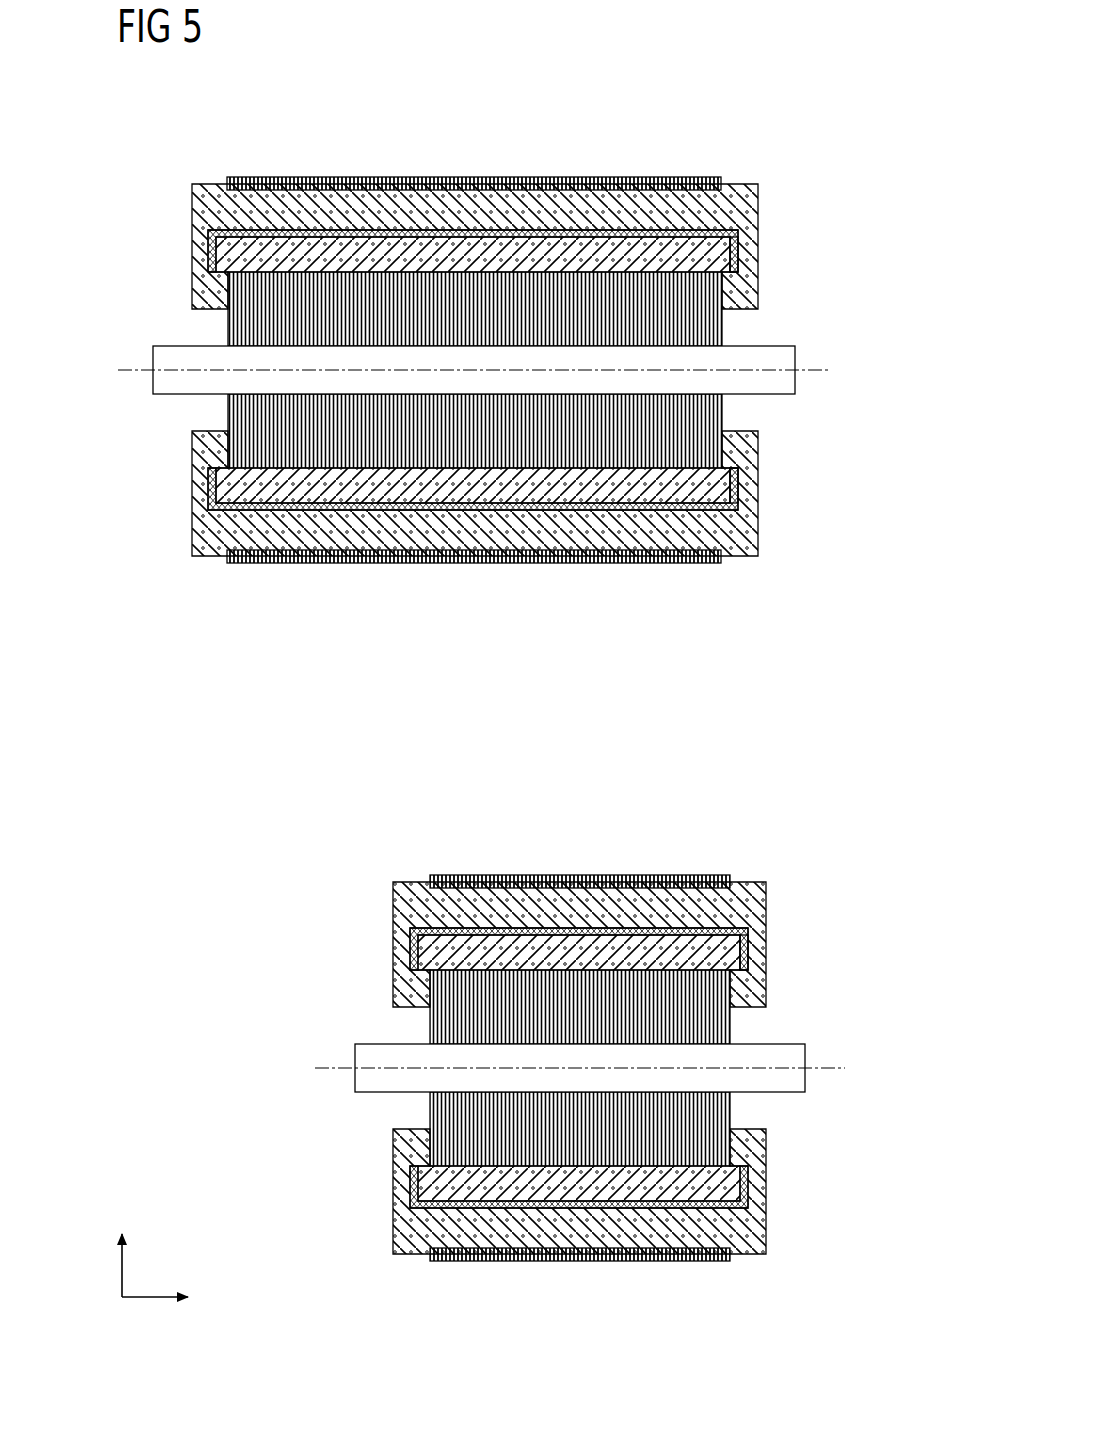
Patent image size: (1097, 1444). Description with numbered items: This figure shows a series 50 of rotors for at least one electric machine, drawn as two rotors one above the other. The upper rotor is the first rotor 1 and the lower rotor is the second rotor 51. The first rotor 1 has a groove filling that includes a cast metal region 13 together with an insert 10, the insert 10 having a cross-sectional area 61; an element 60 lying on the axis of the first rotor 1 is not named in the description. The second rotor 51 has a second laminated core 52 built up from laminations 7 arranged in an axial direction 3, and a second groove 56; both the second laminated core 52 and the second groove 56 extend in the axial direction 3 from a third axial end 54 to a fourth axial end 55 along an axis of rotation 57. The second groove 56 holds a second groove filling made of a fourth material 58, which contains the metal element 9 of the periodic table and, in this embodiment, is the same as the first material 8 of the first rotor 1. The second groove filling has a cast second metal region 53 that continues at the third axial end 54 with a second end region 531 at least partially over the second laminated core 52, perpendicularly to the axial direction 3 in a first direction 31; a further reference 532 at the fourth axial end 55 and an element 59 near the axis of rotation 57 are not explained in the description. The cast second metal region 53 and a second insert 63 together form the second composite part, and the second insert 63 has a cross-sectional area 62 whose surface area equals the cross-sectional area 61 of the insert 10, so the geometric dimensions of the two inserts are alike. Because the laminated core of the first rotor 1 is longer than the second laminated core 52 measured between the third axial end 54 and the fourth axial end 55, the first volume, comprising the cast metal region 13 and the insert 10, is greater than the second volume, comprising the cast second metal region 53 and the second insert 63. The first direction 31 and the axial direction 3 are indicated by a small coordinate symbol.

The first rotor 1 is at (782, 195).
The series of rotors 50 is at (536, 82).
The cast metal region 13 is at (192, 207).
The cross-sectional area of the insert 61 is at (196, 252).
The insert 10 is at (740, 262).
The shaft 60 is at (170, 396).
The second rotor 51 is at (790, 888).
The cast second metal region 53 is at (393, 905).
The second end region 531 is at (399, 1272).
The second axial end of housing 532 is at (768, 1272).
The cross-sectional area of the second insert 62 is at (396, 960).
The second insert 63 is at (748, 953).
The axis of rotation 57 is at (325, 1067).
The second laminated core 52 is at (733, 1028).
The shaft 59 is at (373, 1097).
The laminations 7 is at (712, 1113).
The second groove 56 is at (440, 1236).
The fourth material 58 is at (547, 1242).
The metal element of the periodic table 9 is at (590, 1232).
The first material 8 is at (630, 1232).
The third axial end 54 is at (438, 1279).
The fourth axial end 55 is at (734, 1279).
The first direction 31 is at (120, 1270).
The axial direction 3 is at (148, 1300).